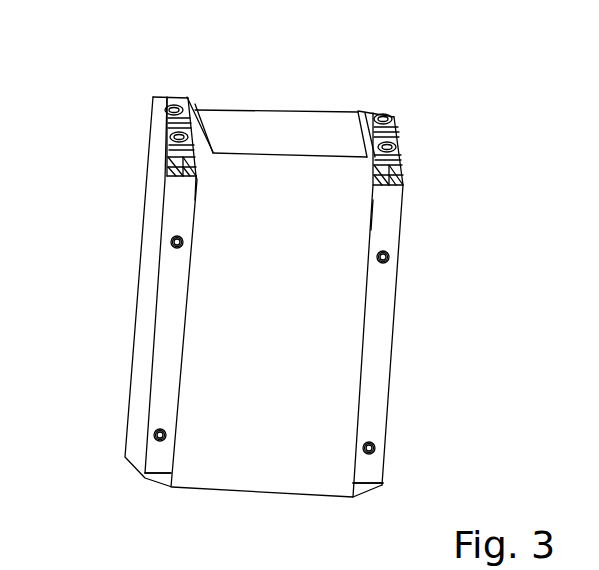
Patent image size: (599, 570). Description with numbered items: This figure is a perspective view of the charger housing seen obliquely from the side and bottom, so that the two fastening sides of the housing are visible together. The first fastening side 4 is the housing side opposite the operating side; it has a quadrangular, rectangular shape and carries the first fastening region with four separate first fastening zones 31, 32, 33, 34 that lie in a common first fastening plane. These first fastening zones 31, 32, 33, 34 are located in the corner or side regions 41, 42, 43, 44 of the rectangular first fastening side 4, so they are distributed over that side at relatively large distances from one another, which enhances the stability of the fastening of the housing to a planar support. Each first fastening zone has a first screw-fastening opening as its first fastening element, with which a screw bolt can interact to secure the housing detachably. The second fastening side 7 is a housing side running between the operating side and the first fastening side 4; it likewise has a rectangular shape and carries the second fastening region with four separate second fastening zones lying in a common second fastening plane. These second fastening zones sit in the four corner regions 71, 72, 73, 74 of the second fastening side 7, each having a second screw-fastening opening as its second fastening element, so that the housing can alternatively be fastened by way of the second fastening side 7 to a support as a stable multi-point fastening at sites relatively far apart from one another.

The second fastening side 7 is at (340, 386).
The corner region 71 is at (372, 215).
The corner region 72 is at (366, 475).
The corner region 73 is at (197, 192).
The corner region 74 is at (160, 457).
The first fastening side 4 is at (285, 128).
The corner or side region 41 is at (397, 117).
The corner or side region 42 is at (400, 150).
The corner or side region 43 is at (157, 98).
The corner or side region 44 is at (157, 143).
The first fastening zone 31 is at (380, 117).
The first fastening zone 32 is at (408, 168).
The first fastening zone 33 is at (177, 98).
The first fastening zone 34 is at (196, 107).